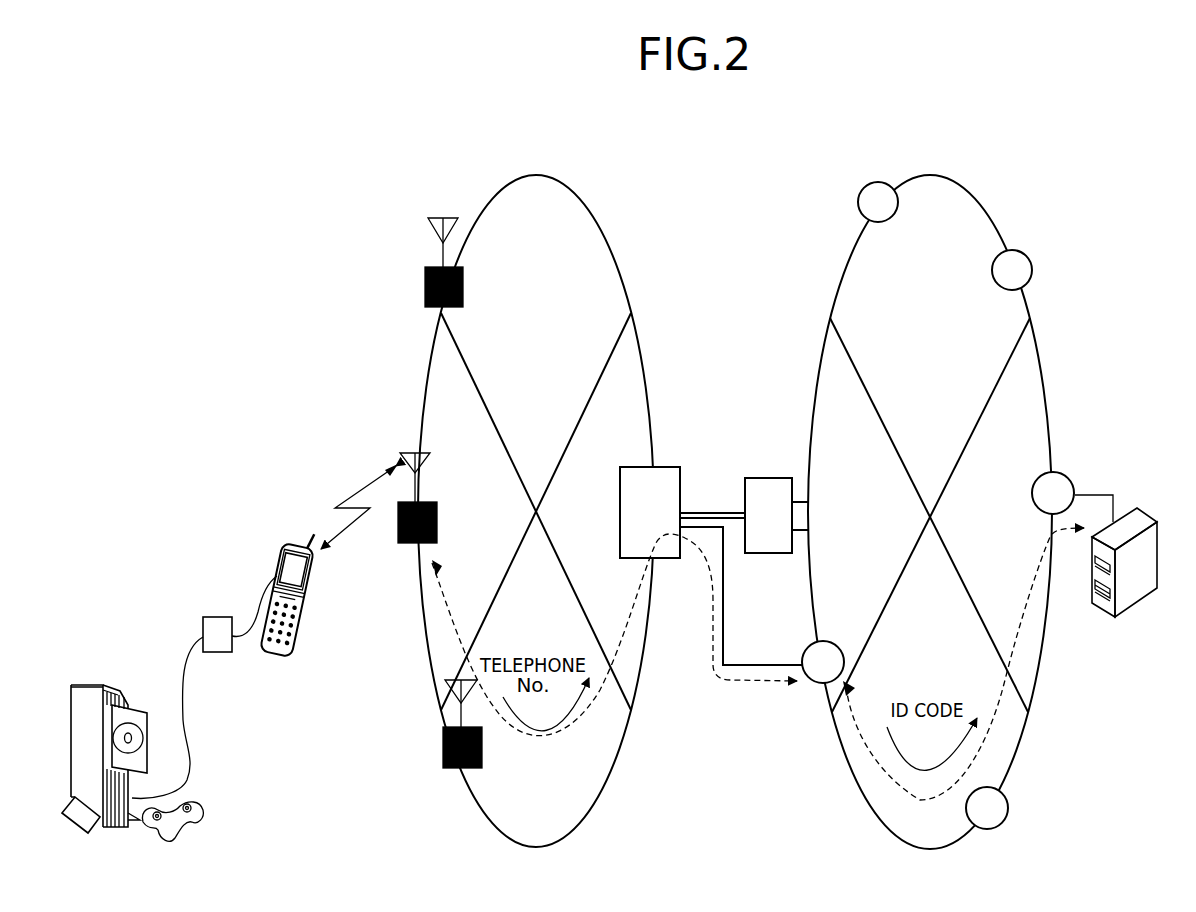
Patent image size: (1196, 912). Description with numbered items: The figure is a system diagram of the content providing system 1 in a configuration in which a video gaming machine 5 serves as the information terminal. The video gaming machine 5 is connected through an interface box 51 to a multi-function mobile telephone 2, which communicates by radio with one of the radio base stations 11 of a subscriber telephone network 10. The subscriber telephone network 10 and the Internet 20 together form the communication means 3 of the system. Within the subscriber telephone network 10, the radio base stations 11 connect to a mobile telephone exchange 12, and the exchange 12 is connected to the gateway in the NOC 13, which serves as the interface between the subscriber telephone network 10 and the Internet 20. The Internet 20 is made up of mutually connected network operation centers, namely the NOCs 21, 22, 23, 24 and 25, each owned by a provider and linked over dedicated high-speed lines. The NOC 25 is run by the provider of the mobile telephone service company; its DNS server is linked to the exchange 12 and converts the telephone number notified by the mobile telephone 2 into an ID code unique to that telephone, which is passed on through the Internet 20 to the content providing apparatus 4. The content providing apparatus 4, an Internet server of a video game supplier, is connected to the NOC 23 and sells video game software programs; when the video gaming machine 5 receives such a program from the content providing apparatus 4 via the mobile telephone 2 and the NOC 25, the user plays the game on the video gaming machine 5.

The content providing system 1 is at (1064, 162).
The multi-function mobile telephone 2 is at (308, 583).
The communication means 3 is at (785, 145).
The content providing apparatus 4 is at (1128, 610).
The video gaming machine 5 is at (102, 685).
The subscriber telephone network 10 is at (609, 242).
The radio base station 11 is at (425, 290).
The mobile telephone exchange 12 is at (660, 467).
The NOC 13 is at (765, 478).
The Internet 20 is at (801, 241).
The NOC 21 is at (862, 183).
The NOC 22 is at (1018, 258).
The NOC 23 is at (1067, 473).
The NOC 24 is at (993, 822).
The NOC 25 is at (812, 682).
The interface box 51 is at (208, 617).